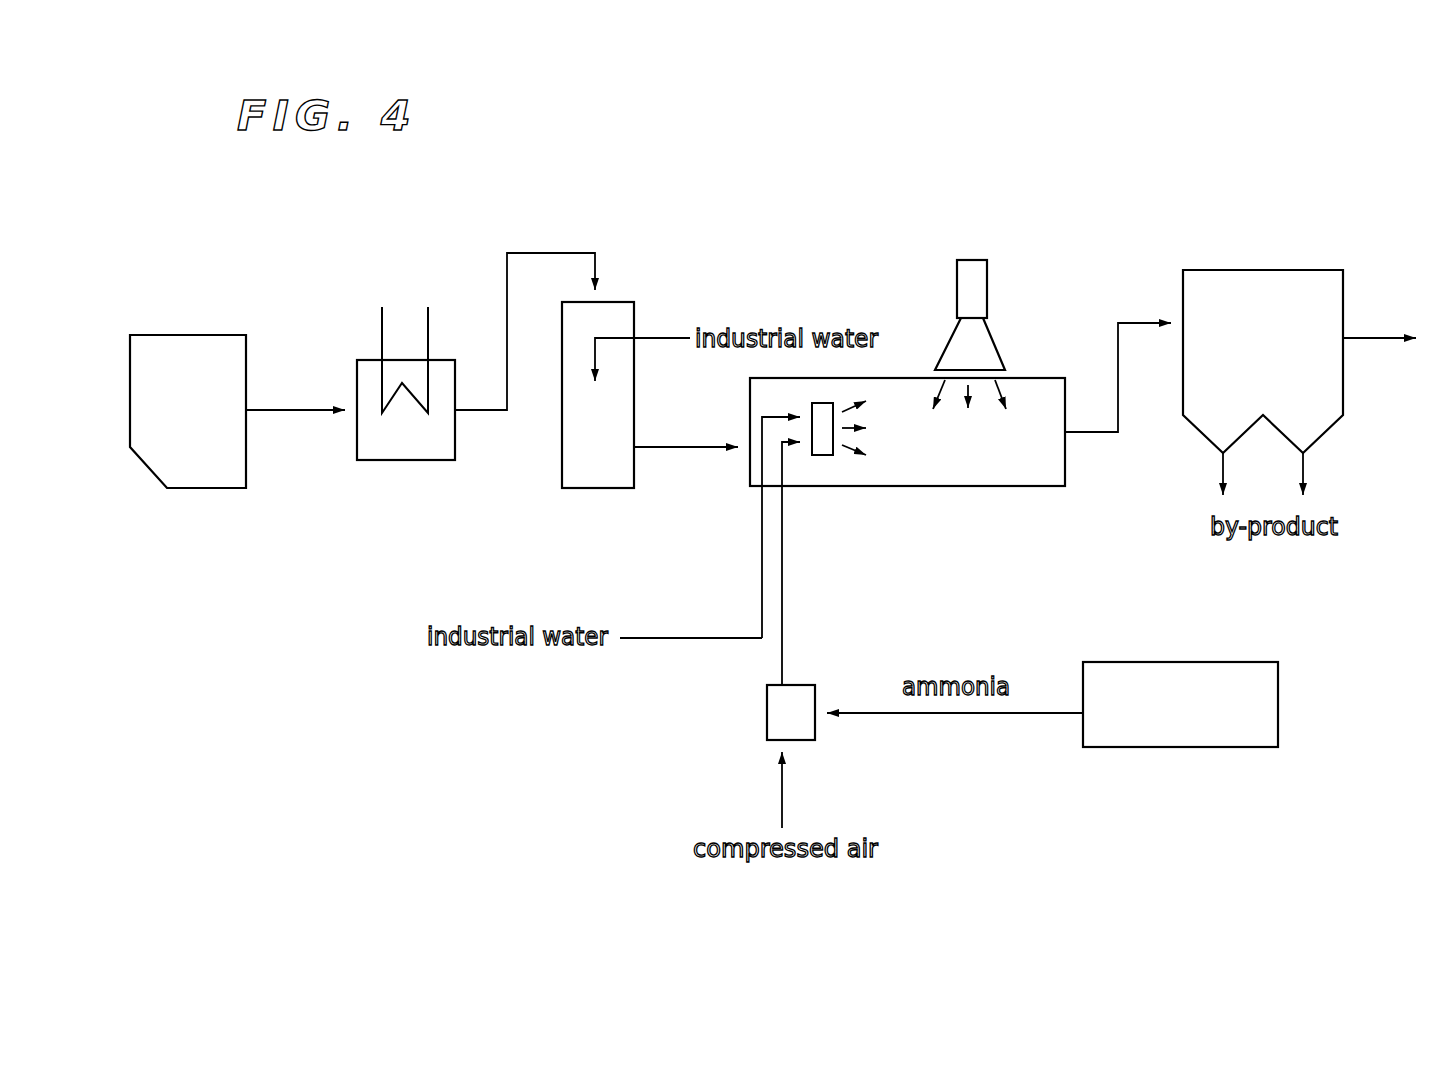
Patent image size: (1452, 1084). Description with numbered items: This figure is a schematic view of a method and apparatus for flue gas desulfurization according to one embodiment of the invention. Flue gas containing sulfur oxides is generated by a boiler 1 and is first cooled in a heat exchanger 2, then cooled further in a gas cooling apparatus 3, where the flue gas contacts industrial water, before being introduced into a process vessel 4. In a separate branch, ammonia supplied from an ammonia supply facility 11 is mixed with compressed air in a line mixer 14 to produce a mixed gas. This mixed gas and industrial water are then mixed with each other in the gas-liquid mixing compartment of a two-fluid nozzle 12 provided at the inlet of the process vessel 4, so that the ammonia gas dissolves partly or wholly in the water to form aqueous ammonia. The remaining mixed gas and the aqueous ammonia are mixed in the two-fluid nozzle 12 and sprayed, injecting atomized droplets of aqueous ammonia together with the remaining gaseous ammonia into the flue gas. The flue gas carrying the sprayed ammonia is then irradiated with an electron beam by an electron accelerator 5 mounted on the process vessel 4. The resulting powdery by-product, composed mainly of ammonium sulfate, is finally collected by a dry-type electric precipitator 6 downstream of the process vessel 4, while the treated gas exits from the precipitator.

The boiler 1 is at (200, 335).
The heat exchanger 2 is at (415, 463).
The gas cooling apparatus 3 is at (614, 300).
The process vessel 4 is at (890, 378).
The electron accelerator 5 is at (987, 296).
The dry-type electric precipitator 6 is at (1262, 270).
The ammonia supply facility 11 is at (1107, 662).
The two-fluid nozzle 12 is at (817, 457).
The line mixer 14 is at (817, 697).